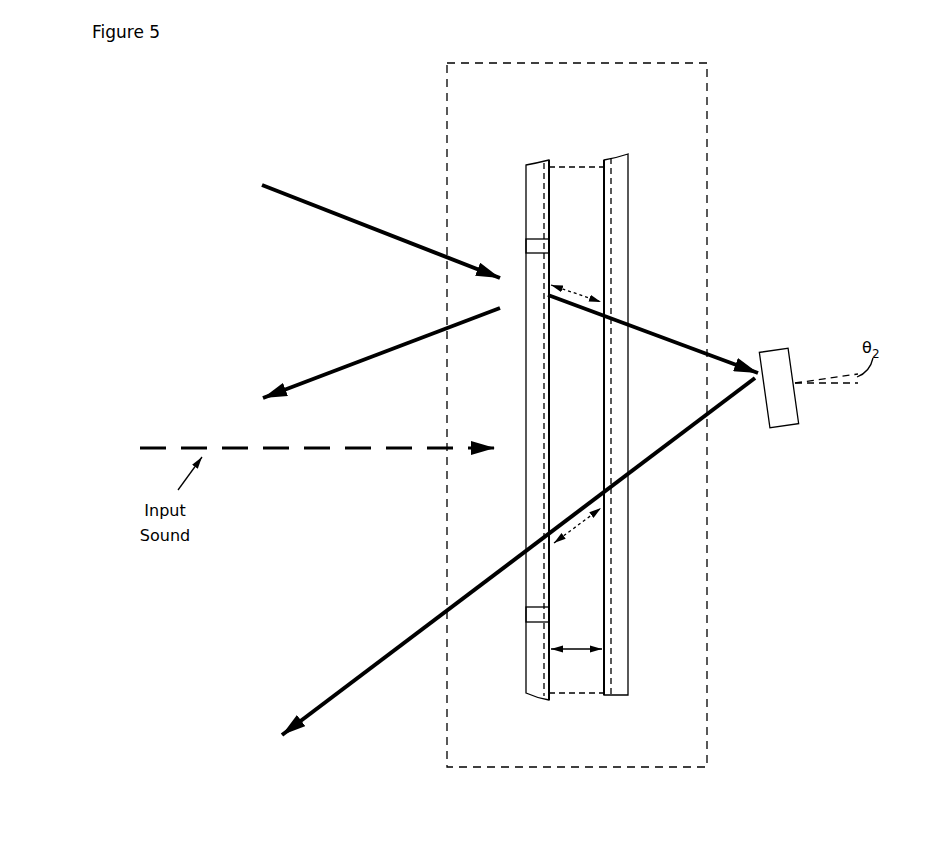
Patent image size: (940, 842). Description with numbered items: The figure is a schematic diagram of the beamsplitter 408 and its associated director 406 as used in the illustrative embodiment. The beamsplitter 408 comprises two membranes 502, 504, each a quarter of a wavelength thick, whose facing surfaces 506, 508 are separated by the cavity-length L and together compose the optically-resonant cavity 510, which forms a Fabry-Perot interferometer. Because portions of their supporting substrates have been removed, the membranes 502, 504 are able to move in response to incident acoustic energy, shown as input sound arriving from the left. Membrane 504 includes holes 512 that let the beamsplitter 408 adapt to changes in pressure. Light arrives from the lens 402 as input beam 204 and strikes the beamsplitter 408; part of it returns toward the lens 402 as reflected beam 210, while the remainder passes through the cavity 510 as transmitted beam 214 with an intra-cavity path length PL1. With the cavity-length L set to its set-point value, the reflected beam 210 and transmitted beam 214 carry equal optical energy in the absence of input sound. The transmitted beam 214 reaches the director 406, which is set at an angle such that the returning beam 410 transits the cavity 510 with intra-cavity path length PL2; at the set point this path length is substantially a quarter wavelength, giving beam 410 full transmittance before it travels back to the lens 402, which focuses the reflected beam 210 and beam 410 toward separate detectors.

The beamsplitter 408 is at (585, 91).
The membrane 504 is at (538, 203).
The membrane 502 is at (617, 202).
The surface 508 is at (548, 408).
The surface 506 is at (605, 408).
The holes 512 is at (540, 243).
The optically-resonant cavity 510 is at (578, 695).
The input beam 204 is at (423, 250).
The reflected beam 210 is at (423, 335).
The transmitted beam 214 is at (713, 352).
The beam 410 is at (423, 625).
The director 406 is at (785, 417).
The lens 402 is at (274, 454).
The intra-cavity path length PL1 is at (578, 295).
The intra-cavity path length PL2 is at (578, 527).
The cavity-length L is at (573, 652).